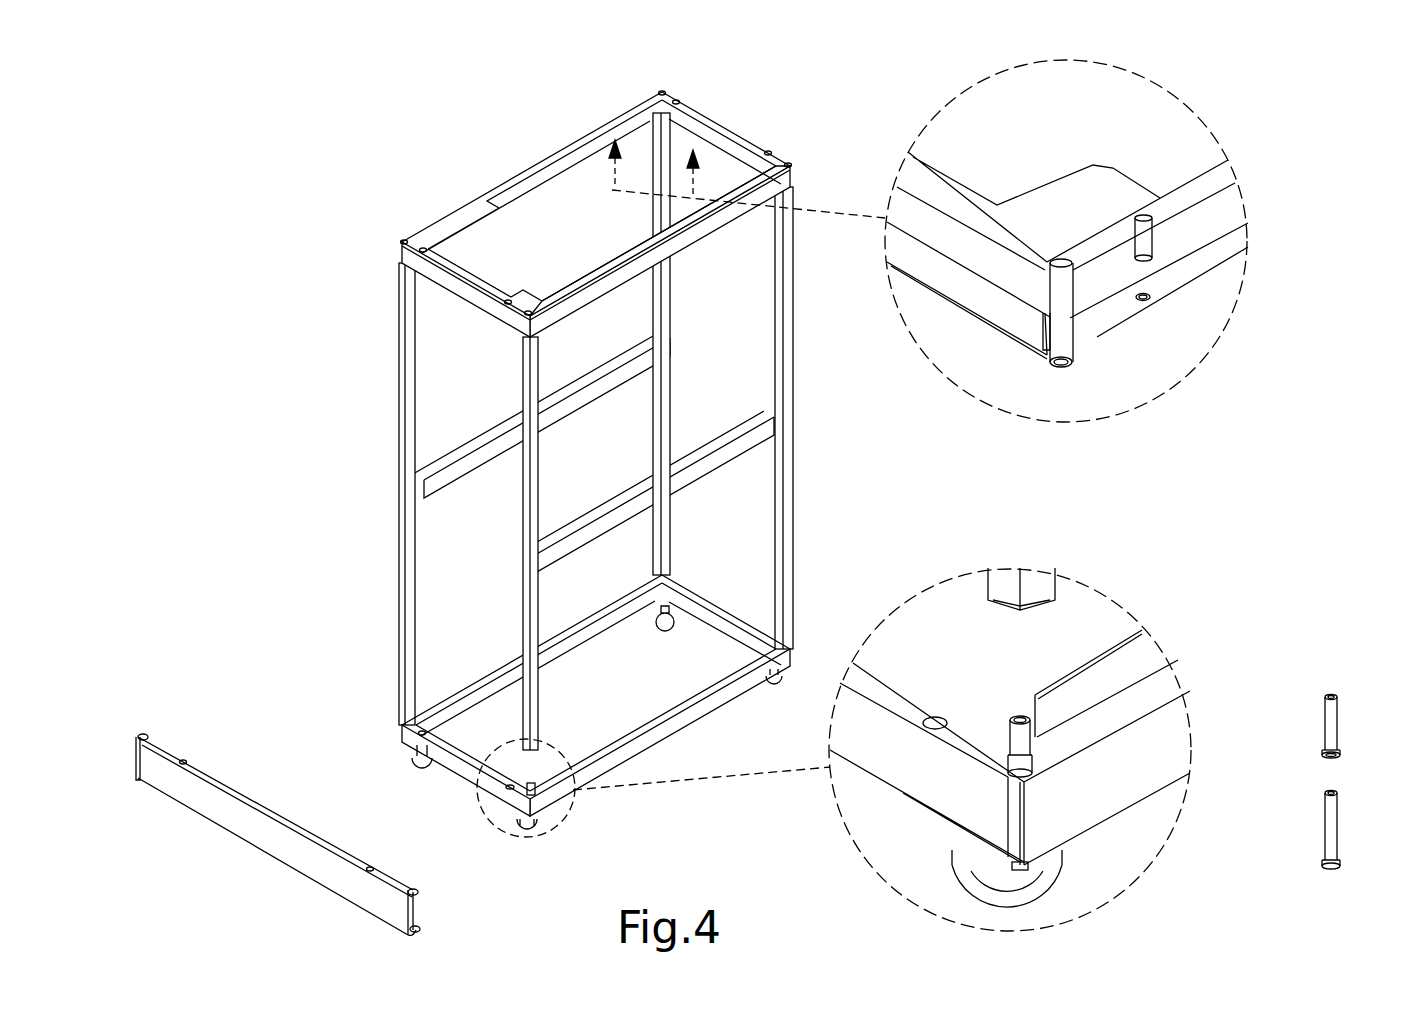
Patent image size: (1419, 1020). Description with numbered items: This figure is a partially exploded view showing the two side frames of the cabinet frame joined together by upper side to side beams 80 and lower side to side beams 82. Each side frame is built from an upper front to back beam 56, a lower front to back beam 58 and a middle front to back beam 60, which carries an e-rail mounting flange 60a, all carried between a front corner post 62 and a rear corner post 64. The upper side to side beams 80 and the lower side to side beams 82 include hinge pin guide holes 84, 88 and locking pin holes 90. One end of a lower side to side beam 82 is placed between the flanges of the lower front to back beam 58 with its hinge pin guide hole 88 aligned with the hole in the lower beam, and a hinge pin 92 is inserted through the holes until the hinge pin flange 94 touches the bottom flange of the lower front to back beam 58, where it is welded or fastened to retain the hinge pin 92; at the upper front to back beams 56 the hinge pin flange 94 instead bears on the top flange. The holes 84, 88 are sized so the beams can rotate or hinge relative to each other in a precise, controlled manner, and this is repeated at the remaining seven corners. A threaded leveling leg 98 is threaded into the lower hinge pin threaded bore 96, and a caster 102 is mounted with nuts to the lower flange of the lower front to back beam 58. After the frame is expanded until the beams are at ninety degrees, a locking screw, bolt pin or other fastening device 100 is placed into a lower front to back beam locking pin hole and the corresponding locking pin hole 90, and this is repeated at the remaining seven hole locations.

The upper front to back beam 56 is at (578, 143).
The lower front to back beam 58 is at (502, 670).
The middle front to back beam 60 is at (470, 462).
The e-rail mounting flange 60a is at (495, 432).
The front corner post 62 is at (400, 540).
The rear corner post 64 is at (788, 315).
The upper side to side beam 80 is at (732, 133).
The lower side to side beam 82 is at (732, 618).
The hinge pin guide hole 84 is at (1070, 337).
The hinge pin guide hole 88 is at (143, 735).
The locking pin hole 90 is at (1152, 222).
The hinge pin 92 is at (528, 315).
The hinge pin flange 94 is at (1325, 752).
The lower hinge pin threaded bore 96 is at (1328, 697).
The threaded leveling leg 98 is at (1020, 743).
The fastening device 100 is at (682, 103).
The caster 102 is at (993, 862).